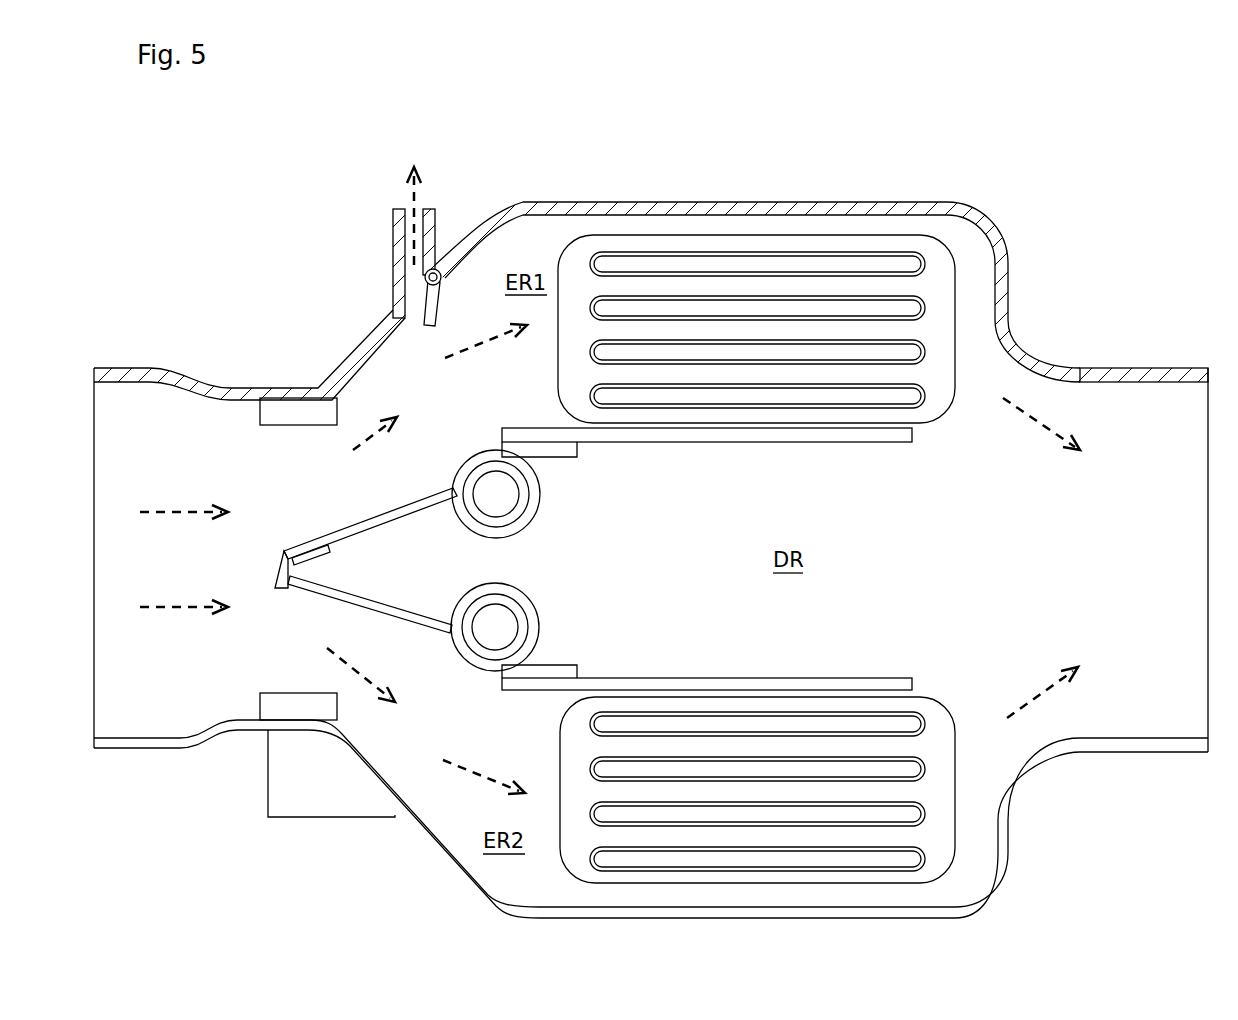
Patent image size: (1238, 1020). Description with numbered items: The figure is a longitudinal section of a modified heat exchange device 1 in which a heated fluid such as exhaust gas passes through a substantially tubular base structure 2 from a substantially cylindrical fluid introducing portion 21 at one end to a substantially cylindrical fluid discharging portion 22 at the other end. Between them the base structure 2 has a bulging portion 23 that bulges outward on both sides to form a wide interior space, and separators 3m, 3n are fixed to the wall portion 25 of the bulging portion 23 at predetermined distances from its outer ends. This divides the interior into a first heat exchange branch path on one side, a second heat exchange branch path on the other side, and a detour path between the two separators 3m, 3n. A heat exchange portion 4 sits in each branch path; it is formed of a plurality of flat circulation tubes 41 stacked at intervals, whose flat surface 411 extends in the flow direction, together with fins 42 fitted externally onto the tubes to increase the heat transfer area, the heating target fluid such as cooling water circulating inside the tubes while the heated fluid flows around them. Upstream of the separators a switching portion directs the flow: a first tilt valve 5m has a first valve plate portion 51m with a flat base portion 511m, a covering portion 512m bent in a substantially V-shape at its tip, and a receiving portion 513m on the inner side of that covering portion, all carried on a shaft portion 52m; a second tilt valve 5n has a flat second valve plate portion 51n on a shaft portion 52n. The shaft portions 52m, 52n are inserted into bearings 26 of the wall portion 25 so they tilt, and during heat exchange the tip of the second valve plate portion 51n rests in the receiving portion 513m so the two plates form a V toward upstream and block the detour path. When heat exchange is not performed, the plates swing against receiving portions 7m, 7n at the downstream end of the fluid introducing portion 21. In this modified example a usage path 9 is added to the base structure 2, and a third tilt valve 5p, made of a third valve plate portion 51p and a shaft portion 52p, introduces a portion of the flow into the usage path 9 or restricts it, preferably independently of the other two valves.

The heat exchange device 1 is at (532, 186).
The base structure 2 is at (600, 201).
The fluid introducing portion 21 is at (118, 368).
The fluid discharging portion 22 is at (1185, 368).
The bulging portion 23 is at (893, 202).
The wall portion 25 is at (985, 262).
The bearing 26 is at (534, 470).
The separator 3m is at (845, 443).
The separator 3n is at (833, 677).
The heat exchange portion 4 is at (742, 236).
The flat circulation tube 41 is at (660, 295).
The flat surface 411 is at (845, 252).
The fin 42 is at (785, 235).
The first tilt valve 5m is at (447, 490).
The second tilt valve 5n is at (428, 632).
The third tilt valve 5p is at (425, 330).
The first valve plate portion 51m is at (350, 531).
The base portion 511m is at (393, 522).
The covering portion 512m is at (279, 572).
The receiving portion 513m is at (330, 556).
The second valve plate portion 51n is at (378, 612).
The third valve plate portion 51p is at (430, 313).
The shaft portion 52m is at (497, 493).
The shaft portion 52n is at (496, 627).
The shaft portion 52p is at (436, 272).
The receiving portion 7m is at (283, 405).
The receiving portion 7n is at (280, 710).
The usage path 9 is at (398, 245).